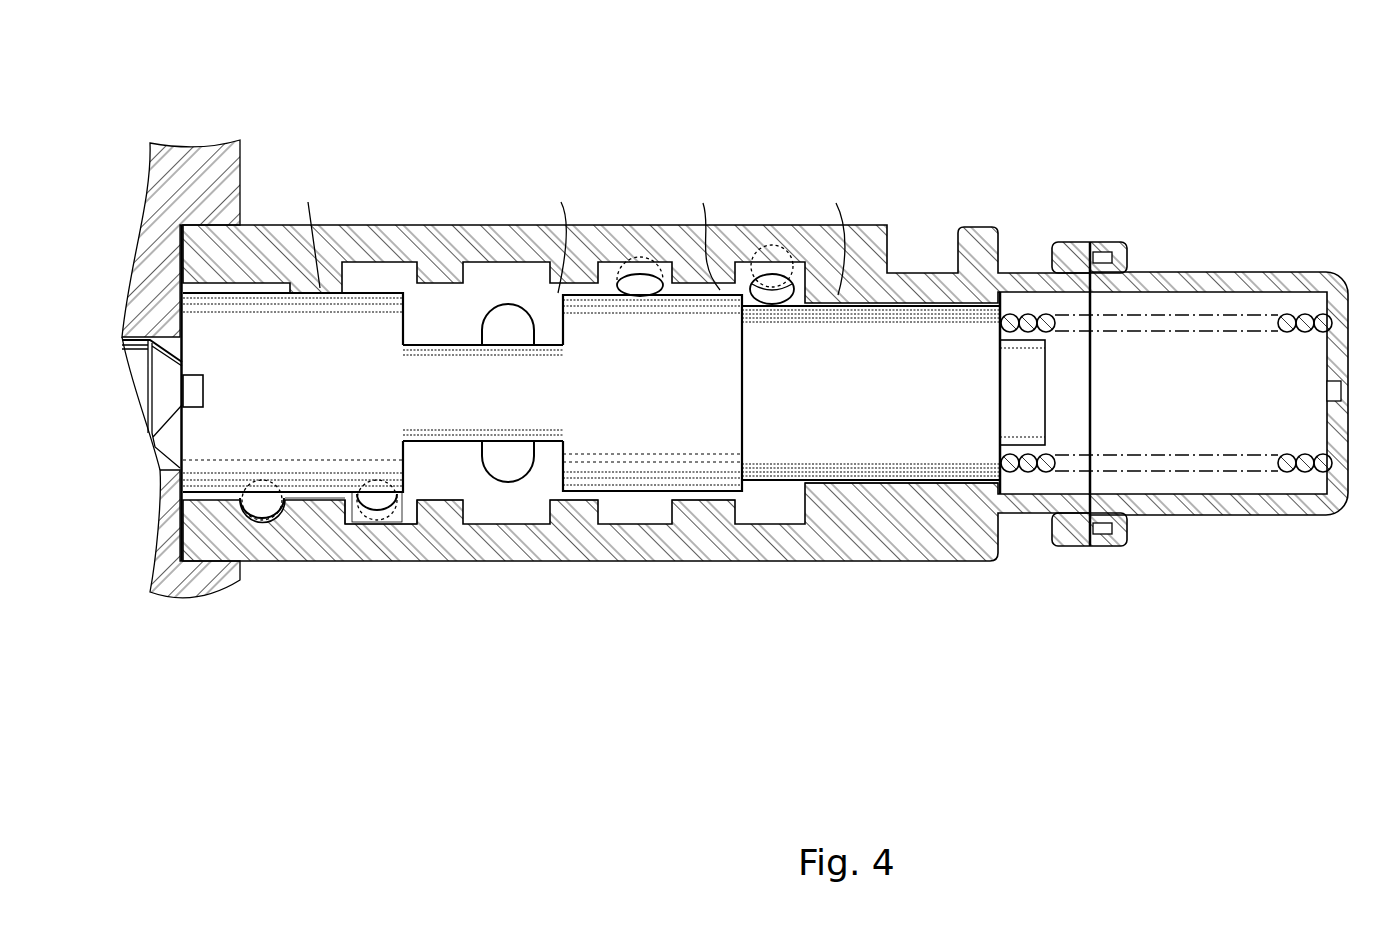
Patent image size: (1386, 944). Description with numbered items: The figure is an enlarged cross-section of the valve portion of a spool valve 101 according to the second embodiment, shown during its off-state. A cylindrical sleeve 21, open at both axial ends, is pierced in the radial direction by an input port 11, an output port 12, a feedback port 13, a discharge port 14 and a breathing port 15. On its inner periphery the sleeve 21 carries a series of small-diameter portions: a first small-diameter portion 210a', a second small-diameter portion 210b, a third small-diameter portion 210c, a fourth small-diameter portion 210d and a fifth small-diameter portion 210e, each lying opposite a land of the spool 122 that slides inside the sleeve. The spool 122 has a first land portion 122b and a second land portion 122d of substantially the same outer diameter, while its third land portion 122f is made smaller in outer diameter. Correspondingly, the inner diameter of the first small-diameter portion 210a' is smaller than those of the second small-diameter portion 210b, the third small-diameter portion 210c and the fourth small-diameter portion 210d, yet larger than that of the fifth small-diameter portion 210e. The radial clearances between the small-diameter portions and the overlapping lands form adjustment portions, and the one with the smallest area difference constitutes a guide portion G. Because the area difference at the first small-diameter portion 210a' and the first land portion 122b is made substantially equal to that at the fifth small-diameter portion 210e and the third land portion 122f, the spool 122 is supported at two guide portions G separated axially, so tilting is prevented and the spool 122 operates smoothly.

The spool valve 101 is at (1068, 118).
The spool 122 is at (327, 288).
The first land portion 122b is at (207, 425).
The second land portion 122d is at (627, 437).
The third land portion 122f is at (945, 480).
The output port 12 is at (533, 310).
The input port 11 is at (663, 260).
The feedback port 13 is at (797, 258).
The discharge port 14 is at (388, 500).
The breathing port 15 is at (305, 520).
The sleeve 21 is at (970, 225).
The guide portion G is at (322, 500).
The first small-diameter portion 210a' is at (351, 602).
The second small-diameter portion 210b is at (437, 498).
The third small-diameter portion 210c is at (588, 500).
The fourth small-diameter portion 210d is at (682, 495).
The fifth small-diameter portion 210e is at (870, 462).